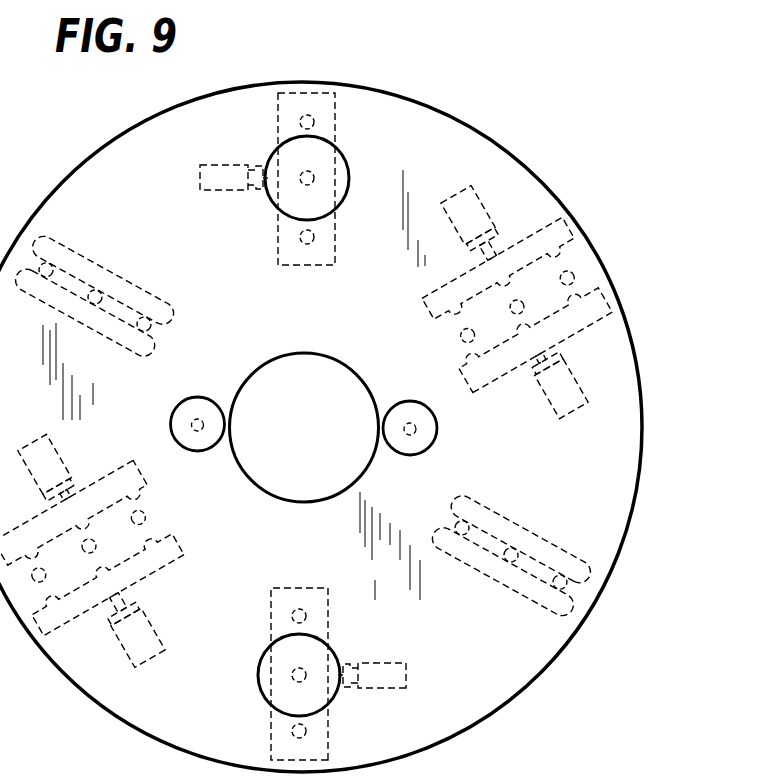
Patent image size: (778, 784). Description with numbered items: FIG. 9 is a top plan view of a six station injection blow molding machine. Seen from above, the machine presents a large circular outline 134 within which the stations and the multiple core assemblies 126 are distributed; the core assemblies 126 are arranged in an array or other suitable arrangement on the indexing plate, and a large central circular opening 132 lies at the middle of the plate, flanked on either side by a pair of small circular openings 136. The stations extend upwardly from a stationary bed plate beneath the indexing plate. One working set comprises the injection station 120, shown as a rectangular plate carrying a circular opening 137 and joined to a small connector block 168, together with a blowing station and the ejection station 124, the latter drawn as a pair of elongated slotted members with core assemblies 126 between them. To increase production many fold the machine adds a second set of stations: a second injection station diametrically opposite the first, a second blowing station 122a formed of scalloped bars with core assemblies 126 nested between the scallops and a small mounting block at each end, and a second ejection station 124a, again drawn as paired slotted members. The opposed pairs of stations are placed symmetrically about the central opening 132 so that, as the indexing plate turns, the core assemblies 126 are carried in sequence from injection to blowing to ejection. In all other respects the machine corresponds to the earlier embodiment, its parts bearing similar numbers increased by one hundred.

The disc / turntable 134 is at (535, 175).
The central opening 132 is at (297, 503).
The small openings 136 is at (204, 394).
The circular opening 137 is at (343, 156).
The injection station 120 is at (338, 252).
The connector block 168 is at (198, 182).
The core assemblies 126 is at (300, 122).
The ejection station 124a is at (167, 254).
The ejection station 124 is at (518, 612).
The blowing station 122a is at (176, 575).